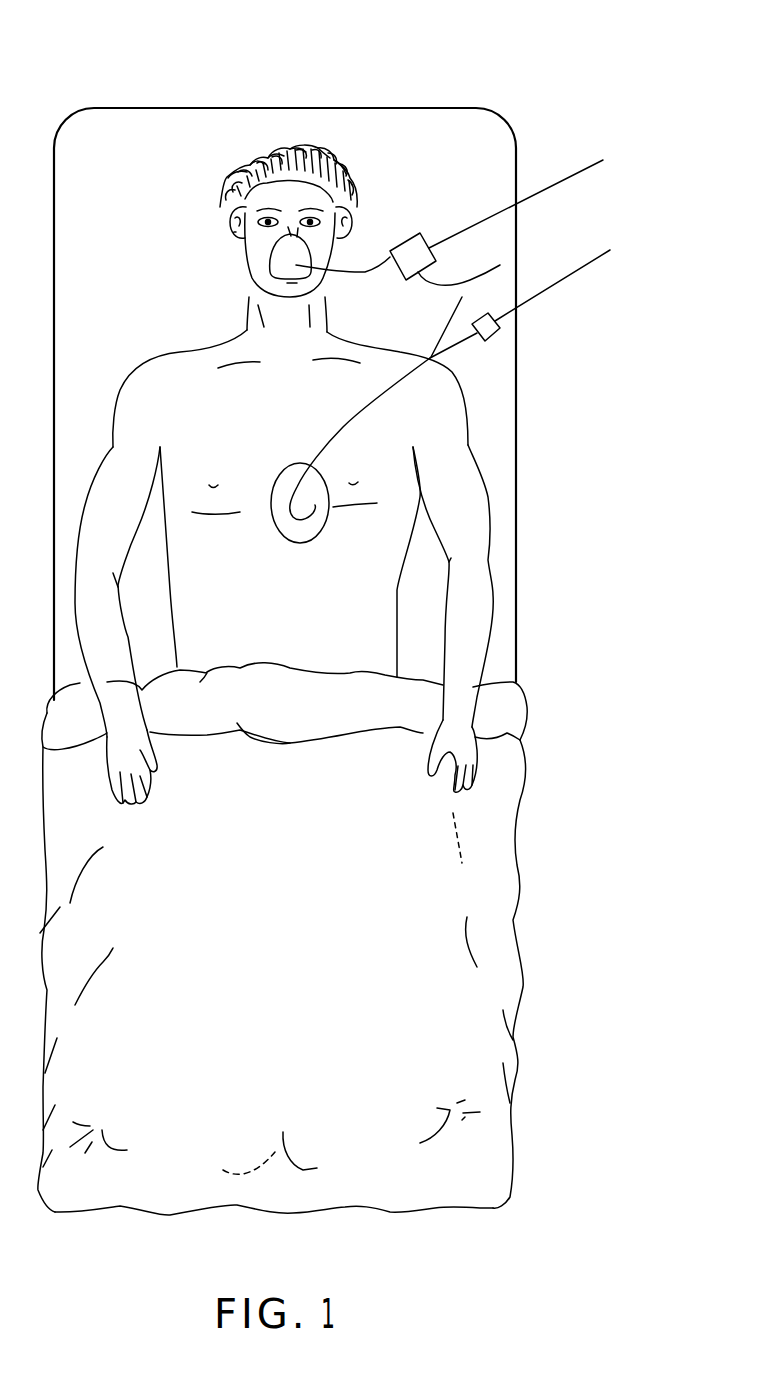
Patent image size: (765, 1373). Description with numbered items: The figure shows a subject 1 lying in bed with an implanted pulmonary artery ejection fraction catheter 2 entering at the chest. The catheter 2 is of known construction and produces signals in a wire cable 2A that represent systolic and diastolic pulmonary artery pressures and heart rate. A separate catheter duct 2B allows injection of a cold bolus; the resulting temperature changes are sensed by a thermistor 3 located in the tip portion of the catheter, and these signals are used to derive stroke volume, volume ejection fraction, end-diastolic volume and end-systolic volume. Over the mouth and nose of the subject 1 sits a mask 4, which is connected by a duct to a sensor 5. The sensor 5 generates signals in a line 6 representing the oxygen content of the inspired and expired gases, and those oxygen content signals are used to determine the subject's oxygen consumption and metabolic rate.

The subject 1 is at (237, 133).
The pulmonary artery ejection fraction catheter 2 is at (360, 408).
The wire cable 2A is at (532, 295).
The catheter duct 2B is at (444, 333).
The thermistor 3 is at (317, 520).
The mask 4 is at (283, 254).
The sensor 5 is at (410, 235).
The line 6 is at (537, 193).